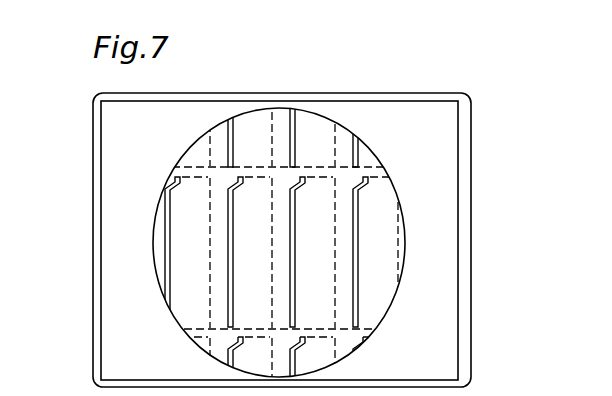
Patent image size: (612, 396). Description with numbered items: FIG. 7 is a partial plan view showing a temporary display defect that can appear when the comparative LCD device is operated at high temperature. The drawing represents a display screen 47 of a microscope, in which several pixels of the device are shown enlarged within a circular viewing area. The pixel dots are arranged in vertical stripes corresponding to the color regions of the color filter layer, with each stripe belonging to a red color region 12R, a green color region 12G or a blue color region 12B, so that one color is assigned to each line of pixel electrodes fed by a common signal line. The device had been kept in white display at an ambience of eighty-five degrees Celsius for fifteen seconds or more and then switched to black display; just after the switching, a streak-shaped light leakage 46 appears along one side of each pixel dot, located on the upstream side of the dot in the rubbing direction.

The display screen 47 is at (140, 93).
The streak-shaped light leakage 46 is at (228, 206).
The red color region 12R is at (252, 252).
The green color region 12G is at (312, 252).
The blue color region 12B is at (281, 262).